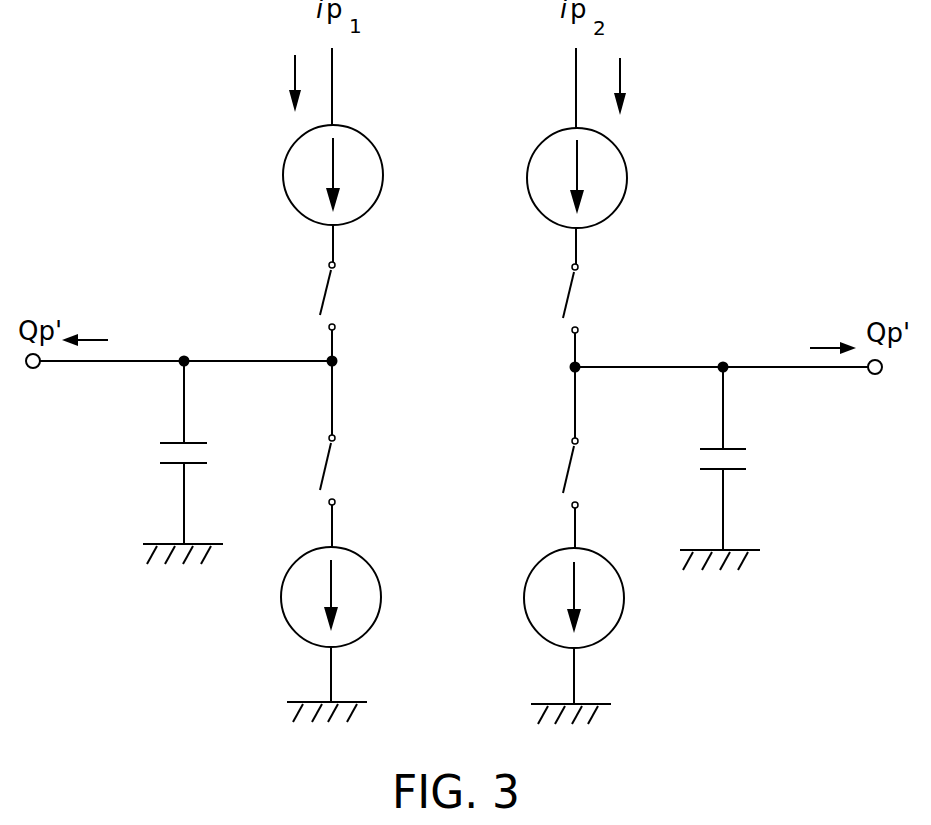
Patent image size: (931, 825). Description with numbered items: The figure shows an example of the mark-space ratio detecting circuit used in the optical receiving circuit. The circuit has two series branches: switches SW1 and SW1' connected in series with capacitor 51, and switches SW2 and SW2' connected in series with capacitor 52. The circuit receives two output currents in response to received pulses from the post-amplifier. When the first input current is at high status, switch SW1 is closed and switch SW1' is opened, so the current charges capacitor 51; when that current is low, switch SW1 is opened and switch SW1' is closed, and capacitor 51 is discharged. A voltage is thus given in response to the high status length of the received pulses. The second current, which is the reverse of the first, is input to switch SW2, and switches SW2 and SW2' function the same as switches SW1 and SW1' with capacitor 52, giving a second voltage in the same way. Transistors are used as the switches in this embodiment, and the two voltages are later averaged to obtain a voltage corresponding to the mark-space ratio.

The capacitor 51 is at (162, 454).
The capacitor 52 is at (748, 461).
The switch SW1 is at (368, 304).
The switch SW1' is at (370, 475).
The switch SW2 is at (612, 298).
The switch SW2' is at (613, 473).